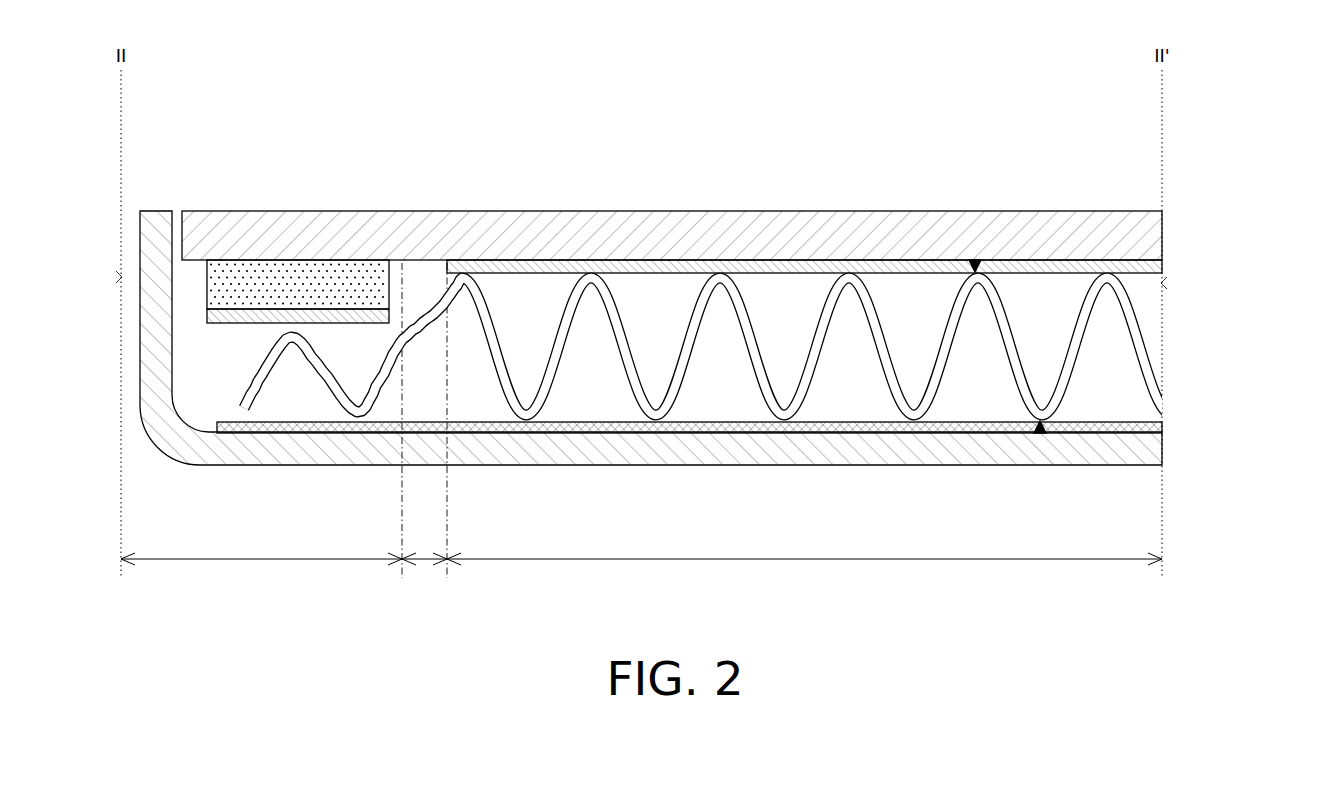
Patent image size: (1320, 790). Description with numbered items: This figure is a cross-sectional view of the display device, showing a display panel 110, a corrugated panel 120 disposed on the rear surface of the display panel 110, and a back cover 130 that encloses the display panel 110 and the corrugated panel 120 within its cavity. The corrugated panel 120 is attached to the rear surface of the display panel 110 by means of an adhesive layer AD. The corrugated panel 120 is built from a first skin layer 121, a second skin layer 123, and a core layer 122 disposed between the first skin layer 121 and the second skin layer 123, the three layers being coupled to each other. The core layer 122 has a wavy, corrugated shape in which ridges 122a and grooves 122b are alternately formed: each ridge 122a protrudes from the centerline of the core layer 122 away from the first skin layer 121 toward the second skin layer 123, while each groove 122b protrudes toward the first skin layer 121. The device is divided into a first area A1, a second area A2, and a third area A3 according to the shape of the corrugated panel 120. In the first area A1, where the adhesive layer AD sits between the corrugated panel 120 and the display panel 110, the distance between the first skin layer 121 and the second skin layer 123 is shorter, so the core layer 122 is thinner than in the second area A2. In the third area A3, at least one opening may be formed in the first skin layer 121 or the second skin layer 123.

The display panel 110 is at (1142, 233).
The corrugated panel 120 is at (756, 347).
The first skin layer 121 is at (1142, 268).
The core layer 122 is at (1140, 327).
The ridge 122a is at (1040, 433).
The groove 122b is at (975, 260).
The second skin layer 123 is at (1142, 426).
The back cover 130 is at (1142, 449).
The adhesive layer AD is at (290, 276).
The first area A1 is at (261, 568).
The second area A2 is at (804, 568).
The third area A3 is at (424, 568).